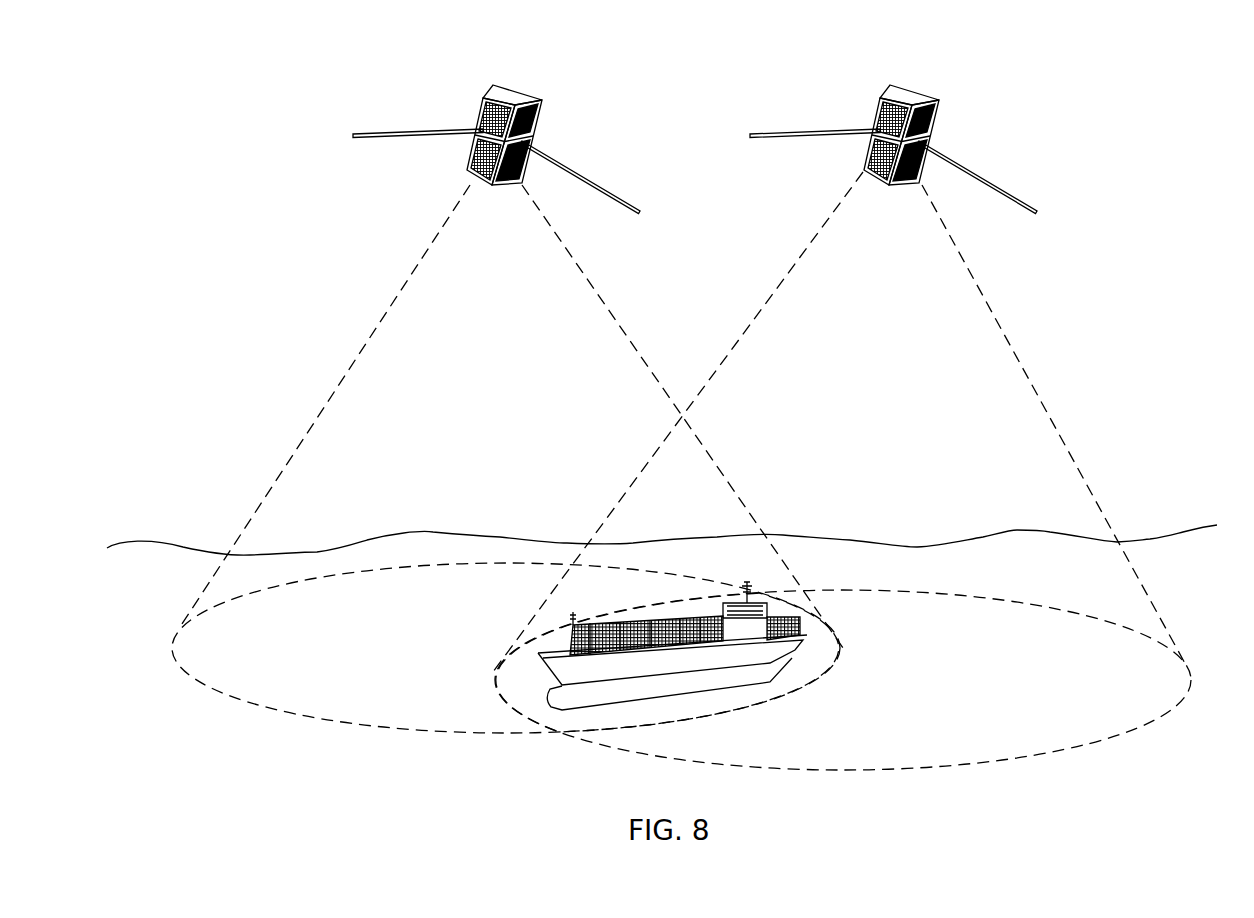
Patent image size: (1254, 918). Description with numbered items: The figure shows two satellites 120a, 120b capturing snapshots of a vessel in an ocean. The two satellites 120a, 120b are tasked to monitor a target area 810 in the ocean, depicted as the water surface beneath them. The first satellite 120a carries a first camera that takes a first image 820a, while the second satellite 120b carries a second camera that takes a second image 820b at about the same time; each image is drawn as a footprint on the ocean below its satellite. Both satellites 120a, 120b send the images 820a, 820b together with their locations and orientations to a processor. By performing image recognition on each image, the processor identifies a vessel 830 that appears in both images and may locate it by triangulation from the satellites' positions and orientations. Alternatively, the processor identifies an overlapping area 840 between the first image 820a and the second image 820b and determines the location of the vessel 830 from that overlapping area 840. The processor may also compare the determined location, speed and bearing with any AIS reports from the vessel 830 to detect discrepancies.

The first satellite 120a is at (482, 93).
The second satellite 120b is at (900, 88).
The target area 810 is at (172, 563).
The first image 820a is at (288, 713).
The second image 820b is at (990, 763).
The vessel 830 is at (548, 707).
The overlapping area 840 is at (613, 717).